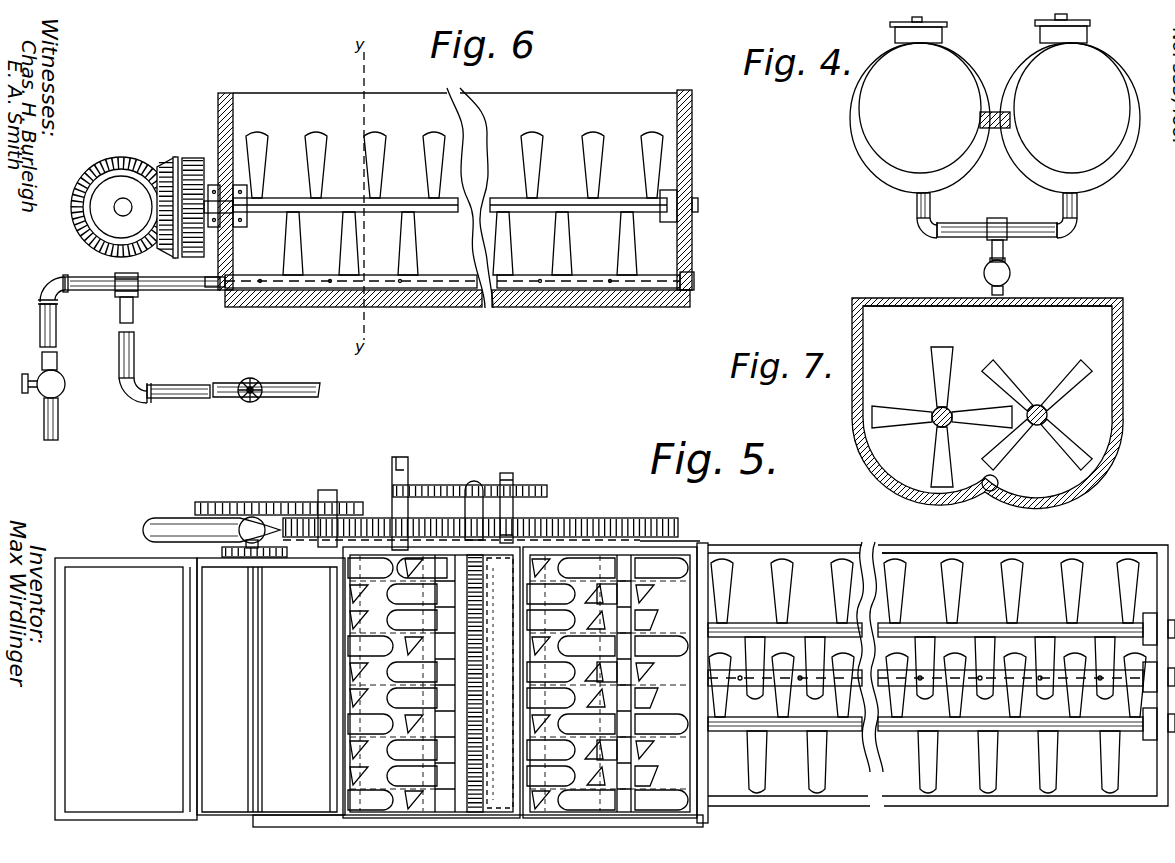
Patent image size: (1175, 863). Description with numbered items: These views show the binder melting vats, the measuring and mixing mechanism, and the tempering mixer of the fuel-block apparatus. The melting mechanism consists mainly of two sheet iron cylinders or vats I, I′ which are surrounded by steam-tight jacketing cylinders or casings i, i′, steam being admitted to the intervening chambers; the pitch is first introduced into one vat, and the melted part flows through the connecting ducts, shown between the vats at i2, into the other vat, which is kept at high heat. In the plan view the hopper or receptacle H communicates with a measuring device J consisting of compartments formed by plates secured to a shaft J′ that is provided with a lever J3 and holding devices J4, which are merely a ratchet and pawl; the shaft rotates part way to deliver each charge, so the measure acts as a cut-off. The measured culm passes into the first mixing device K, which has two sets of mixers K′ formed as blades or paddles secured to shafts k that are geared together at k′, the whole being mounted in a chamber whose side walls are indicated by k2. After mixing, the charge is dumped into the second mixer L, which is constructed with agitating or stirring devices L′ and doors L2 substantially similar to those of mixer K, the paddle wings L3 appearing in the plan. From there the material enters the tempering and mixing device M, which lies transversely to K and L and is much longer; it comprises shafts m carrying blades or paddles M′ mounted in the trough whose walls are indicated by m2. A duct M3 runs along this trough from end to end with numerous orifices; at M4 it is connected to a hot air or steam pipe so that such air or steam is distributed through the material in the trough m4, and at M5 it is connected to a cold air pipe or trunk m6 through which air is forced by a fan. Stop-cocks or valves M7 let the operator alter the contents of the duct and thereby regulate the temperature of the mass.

In FIG. 6, the tempering and mixing device M is at (437, 198).
In FIG. 5, the tempering and mixing device M is at (936, 669).
In FIG. 6, the blades or paddles M′ is at (454, 203).
In FIG. 7, the blades or paddles M′ is at (1004, 415).
In FIG. 5, the blades or paddles M′ is at (927, 676).
In FIG. 6, the shafts m is at (465, 198).
In FIG. 7, the shafts m is at (932, 414).
In FIG. 5, the shafts m is at (925, 671).
In FIG. 6, the trough walls m2 is at (340, 81).
In FIG. 7, the trough walls m2 is at (1001, 403).
In FIG. 5, the trough walls m2 is at (1019, 538).
In FIG. 6, the trough m4 is at (568, 102).
In FIG. 7, the trough m4 is at (987, 320).
In FIG. 6, the duct M3 is at (449, 269).
In FIG. 7, the duct M3 is at (998, 483).
In FIG. 5, the duct M3 is at (738, 670).
In FIG. 6, the hot air or steam connection M4 is at (162, 338).
In FIG. 6, the cold air connection M5 is at (114, 289).
In FIG. 6, the cold air pipe or trunk m6 is at (40, 372).
In FIG. 6, the stop-cocks or valves M7 is at (163, 401).
In FIG. 4, the cylinder or vat I is at (1070, 103).
In FIG. 4, the cylinder or vat I′ is at (920, 105).
In FIG. 4, the jacketing cylinder or casing i is at (1097, 172).
In FIG. 4, the jacketing cylinder or casing i′ is at (958, 170).
In FIG. 4, the connecting piece between tanks i2 is at (983, 111).
In FIG. 5, the hopper or receptacle H is at (126, 689).
In FIG. 5, the measuring device J is at (244, 770).
In FIG. 5, the shaft J′ is at (255, 689).
In FIG. 5, the levers J3 is at (208, 514).
In FIG. 5, the holding devices J4 is at (250, 543).
In FIG. 5, the first mixing device K is at (431, 697).
In FIG. 5, the mixers K′ is at (401, 683).
In FIG. 5, the shafts k is at (481, 683).
In FIG. 5, the gearing k′ is at (395, 508).
In FIG. 5, the side walls k2 is at (500, 683).
In FIG. 5, the second mixer L is at (610, 696).
In FIG. 5, the agitating or stirring devices L′ is at (607, 683).
In FIG. 5, the doors L2 is at (610, 683).
In FIG. 5, the paddle wings L3 is at (593, 684).